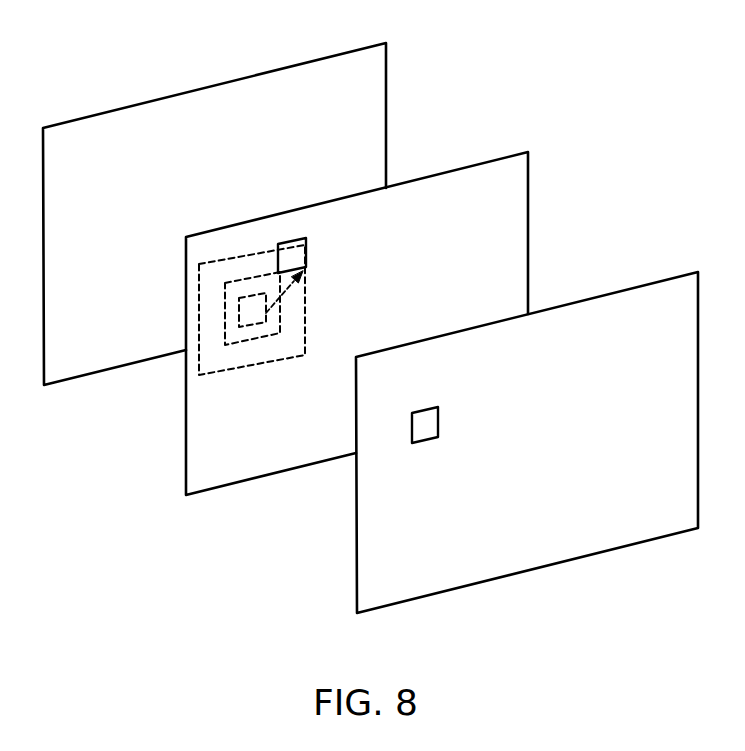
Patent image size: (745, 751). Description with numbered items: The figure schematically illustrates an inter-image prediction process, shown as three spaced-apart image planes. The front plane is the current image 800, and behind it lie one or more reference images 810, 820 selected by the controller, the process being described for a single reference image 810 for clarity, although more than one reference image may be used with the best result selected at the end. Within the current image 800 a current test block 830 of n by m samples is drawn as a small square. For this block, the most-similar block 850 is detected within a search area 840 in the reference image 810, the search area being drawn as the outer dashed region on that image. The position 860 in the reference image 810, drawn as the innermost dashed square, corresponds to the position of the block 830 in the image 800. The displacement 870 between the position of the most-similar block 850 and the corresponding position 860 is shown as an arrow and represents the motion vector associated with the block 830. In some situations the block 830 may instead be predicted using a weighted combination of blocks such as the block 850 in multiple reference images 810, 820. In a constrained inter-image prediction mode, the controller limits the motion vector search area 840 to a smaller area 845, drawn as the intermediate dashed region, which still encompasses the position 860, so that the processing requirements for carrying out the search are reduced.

The current image 800 is at (640, 280).
The reference image 810 is at (495, 160).
The reference image 820 is at (388, 82).
The current test block 830 is at (410, 427).
The search area 840 is at (222, 375).
The smaller area 845 is at (260, 340).
The most-similar block 850 is at (292, 240).
The position 860 is at (239, 313).
The displacement 870 is at (302, 288).